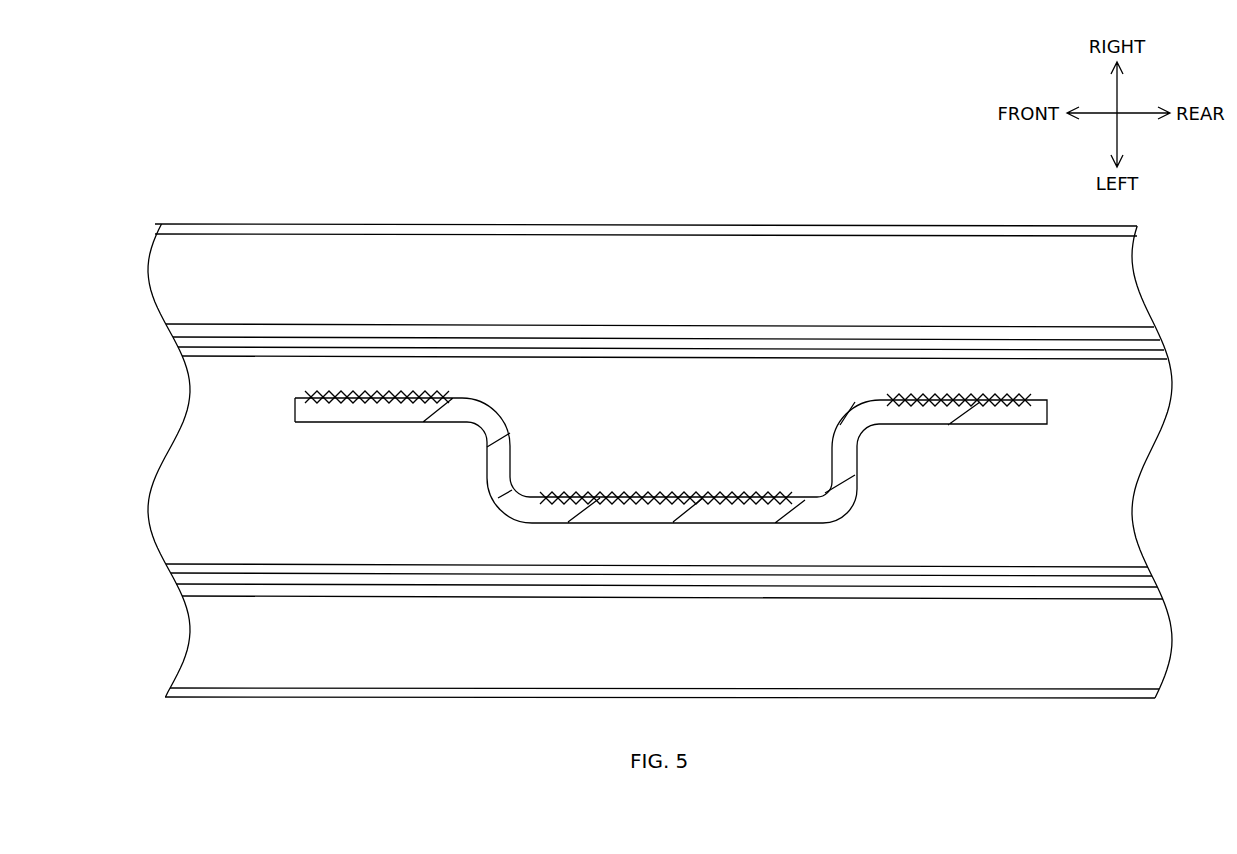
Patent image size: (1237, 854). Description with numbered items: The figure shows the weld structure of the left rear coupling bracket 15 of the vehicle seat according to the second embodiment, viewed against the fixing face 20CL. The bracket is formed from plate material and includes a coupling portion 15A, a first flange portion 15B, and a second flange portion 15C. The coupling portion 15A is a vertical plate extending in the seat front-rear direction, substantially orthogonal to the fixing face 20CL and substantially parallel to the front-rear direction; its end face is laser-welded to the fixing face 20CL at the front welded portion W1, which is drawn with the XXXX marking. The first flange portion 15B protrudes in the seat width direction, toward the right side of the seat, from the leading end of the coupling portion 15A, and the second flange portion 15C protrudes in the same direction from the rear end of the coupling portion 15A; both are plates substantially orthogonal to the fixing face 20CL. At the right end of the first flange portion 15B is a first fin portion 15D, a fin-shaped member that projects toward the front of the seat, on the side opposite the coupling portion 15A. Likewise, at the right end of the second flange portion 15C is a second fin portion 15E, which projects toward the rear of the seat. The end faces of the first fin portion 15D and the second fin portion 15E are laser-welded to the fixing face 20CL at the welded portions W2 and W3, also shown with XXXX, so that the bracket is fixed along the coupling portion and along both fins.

The fixing face 20CL is at (208, 404).
The left rear coupling bracket 15 is at (671, 454).
The coupling portion 15A is at (601, 524).
The first flange portion 15B is at (513, 463).
The second flange portion 15C is at (830, 457).
The first fin portion 15D is at (332, 424).
The second fin portion 15E is at (978, 427).
The front welded portion W1 is at (668, 497).
The welded portion W2 is at (383, 393).
The welded portion W3 is at (968, 400).